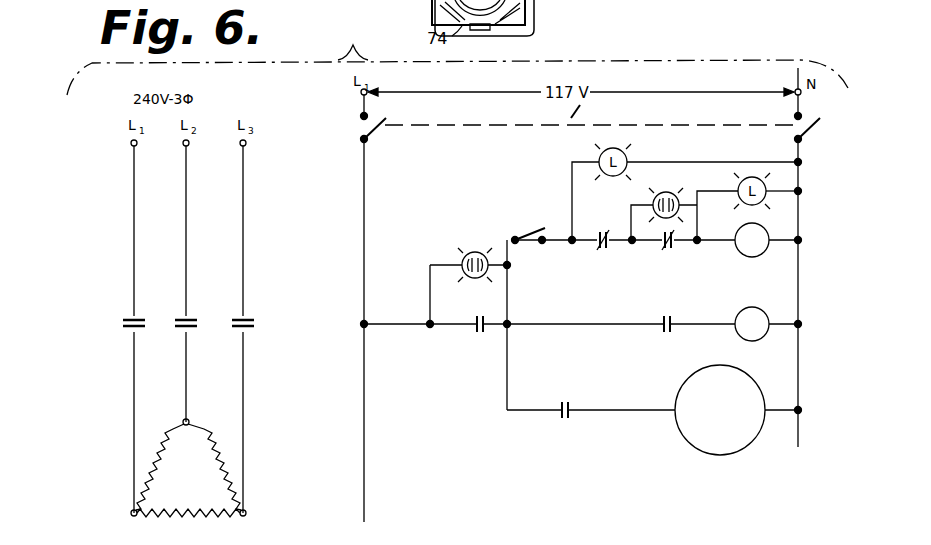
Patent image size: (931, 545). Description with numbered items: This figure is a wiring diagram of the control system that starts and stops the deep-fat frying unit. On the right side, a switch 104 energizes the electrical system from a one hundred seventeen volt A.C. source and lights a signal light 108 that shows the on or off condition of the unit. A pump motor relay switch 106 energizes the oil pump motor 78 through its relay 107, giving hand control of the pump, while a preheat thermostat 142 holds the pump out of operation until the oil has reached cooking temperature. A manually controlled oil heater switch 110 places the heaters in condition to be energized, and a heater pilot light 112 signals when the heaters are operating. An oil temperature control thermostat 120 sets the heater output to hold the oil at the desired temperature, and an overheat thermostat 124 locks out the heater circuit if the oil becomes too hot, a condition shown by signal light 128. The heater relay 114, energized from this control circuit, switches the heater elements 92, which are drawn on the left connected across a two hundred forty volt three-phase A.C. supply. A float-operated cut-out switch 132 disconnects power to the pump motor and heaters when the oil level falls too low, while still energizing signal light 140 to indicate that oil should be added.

The oil pump motor 78 is at (697, 378).
The heater elements 92 is at (196, 463).
The switch 104 is at (383, 128).
The pump motor relay switch 106 is at (570, 400).
The relay 107 is at (750, 314).
The signal light 108 is at (630, 152).
The oil heater switch 110 is at (527, 232).
The heater pilot light 112 is at (767, 194).
The heater relay 114 is at (767, 230).
The oil temperature control thermostat 120 is at (600, 250).
The overheat thermostat 124 is at (668, 252).
The signal light 128 is at (645, 199).
The cut-out switch 132 is at (478, 331).
The signal light 140 is at (473, 250).
The preheat thermostat 142 is at (668, 334).